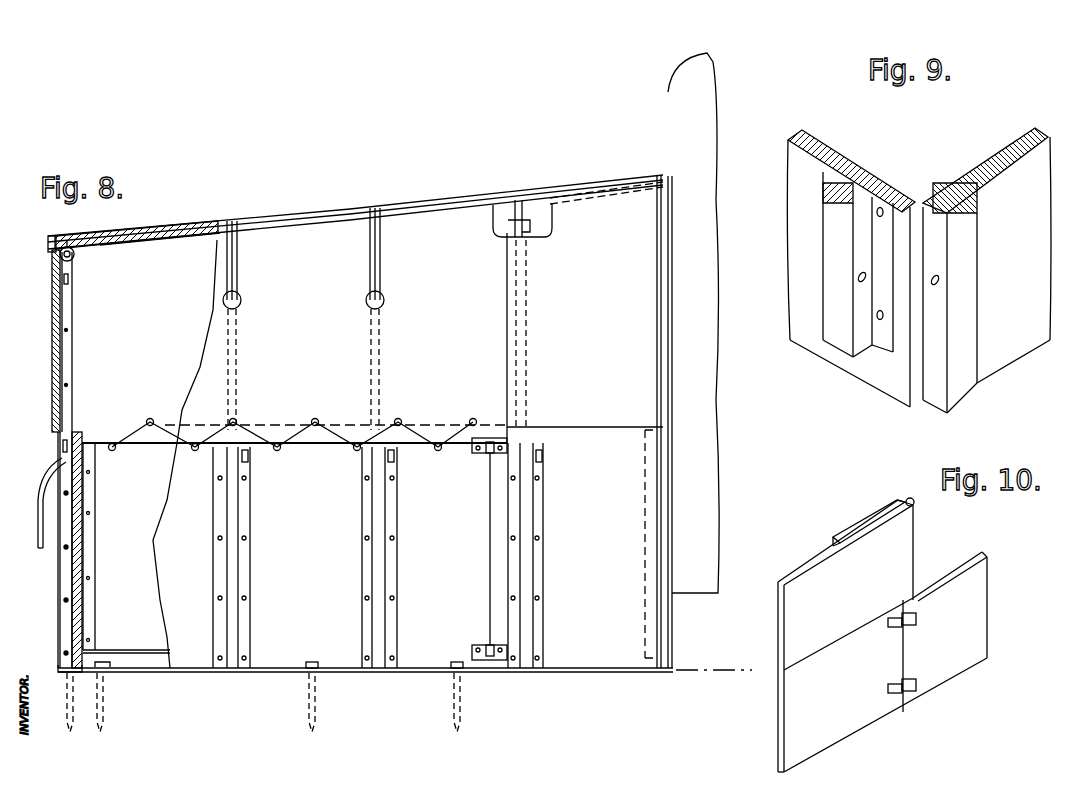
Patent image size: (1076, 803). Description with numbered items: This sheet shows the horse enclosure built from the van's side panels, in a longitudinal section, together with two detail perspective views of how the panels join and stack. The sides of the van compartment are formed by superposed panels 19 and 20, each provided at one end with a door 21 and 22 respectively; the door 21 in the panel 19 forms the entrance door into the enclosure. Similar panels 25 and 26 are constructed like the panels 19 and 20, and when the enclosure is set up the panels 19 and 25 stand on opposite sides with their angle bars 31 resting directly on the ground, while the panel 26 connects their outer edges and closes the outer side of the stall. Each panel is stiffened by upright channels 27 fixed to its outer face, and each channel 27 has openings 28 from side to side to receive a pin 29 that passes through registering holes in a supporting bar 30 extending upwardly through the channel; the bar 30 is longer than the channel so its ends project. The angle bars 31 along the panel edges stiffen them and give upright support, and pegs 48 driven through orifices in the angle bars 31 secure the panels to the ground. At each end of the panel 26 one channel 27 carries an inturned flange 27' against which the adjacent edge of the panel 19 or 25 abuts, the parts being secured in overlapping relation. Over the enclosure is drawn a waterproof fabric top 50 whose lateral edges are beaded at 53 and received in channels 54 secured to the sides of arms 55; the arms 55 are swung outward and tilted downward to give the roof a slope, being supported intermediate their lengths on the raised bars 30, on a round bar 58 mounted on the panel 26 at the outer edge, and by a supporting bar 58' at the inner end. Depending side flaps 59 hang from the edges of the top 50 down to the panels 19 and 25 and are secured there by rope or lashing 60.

In FIG. 8, the panel 19 is at (287, 650).
In FIG. 10, the panel 19 is at (847, 727).
In FIG. 8, the panel 20 is at (664, 633).
In FIG. 10, the panel 20 is at (803, 567).
In FIG. 8, the door 21 is at (617, 650).
In FIG. 10, the door 21 is at (965, 663).
In FIG. 10, the door 22 is at (853, 522).
In FIG. 8, the panel 25 is at (126, 555).
In FIG. 9, the panel 25 is at (827, 148).
In FIG. 8, the panel 26 is at (82, 542).
In FIG. 9, the panel 26 is at (1035, 340).
In FIG. 8, the upright channel 27 is at (281, 550).
In FIG. 9, the upright channel 27 is at (900, 292).
In FIG. 9, the inturned flange 27' is at (917, 242).
In FIG. 9, the opening 28 is at (856, 282).
In FIG. 8, the pin 29 is at (62, 445).
In FIG. 8, the supporting bar 30 is at (70, 356).
In FIG. 9, the supporting bar 30 is at (857, 187).
In FIG. 8, the angle bar 31 is at (192, 673).
In FIG. 8, the peg 48 is at (102, 703).
In FIG. 8, the fabric top 50 is at (205, 236).
In FIG. 8, the bead 53 is at (35, 483).
In FIG. 8, the channel 54 is at (173, 230).
In FIG. 8, the arm 55 is at (316, 212).
In FIG. 8, the round bar 58 is at (92, 261).
In FIG. 8, the supporting bar 58' is at (522, 194).
In FIG. 8, the side flap 59 is at (391, 399).
In FIG. 8, the rope or lashing 60 is at (130, 436).